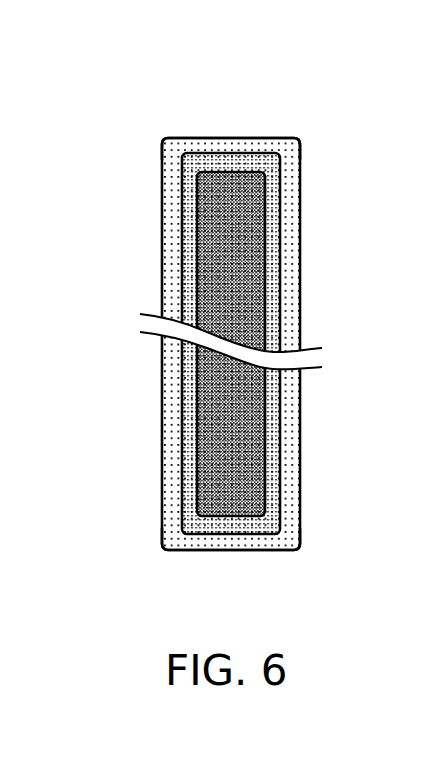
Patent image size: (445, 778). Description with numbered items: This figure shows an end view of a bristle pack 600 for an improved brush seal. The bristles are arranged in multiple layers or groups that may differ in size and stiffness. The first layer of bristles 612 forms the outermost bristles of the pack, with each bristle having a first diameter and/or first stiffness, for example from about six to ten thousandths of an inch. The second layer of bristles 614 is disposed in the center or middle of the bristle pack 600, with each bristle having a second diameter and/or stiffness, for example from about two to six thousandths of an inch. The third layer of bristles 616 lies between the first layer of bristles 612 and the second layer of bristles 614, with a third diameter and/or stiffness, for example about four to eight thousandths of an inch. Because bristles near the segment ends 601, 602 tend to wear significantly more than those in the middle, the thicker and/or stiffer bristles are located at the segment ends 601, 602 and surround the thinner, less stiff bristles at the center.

The bristle pack 600 is at (252, 314).
The segment end 601 is at (168, 128).
The segment end 602 is at (276, 564).
The first layer of bristles 612 is at (292, 449).
The second layer of bristles 614 is at (208, 206).
The third layer of bristles 616 is at (272, 310).